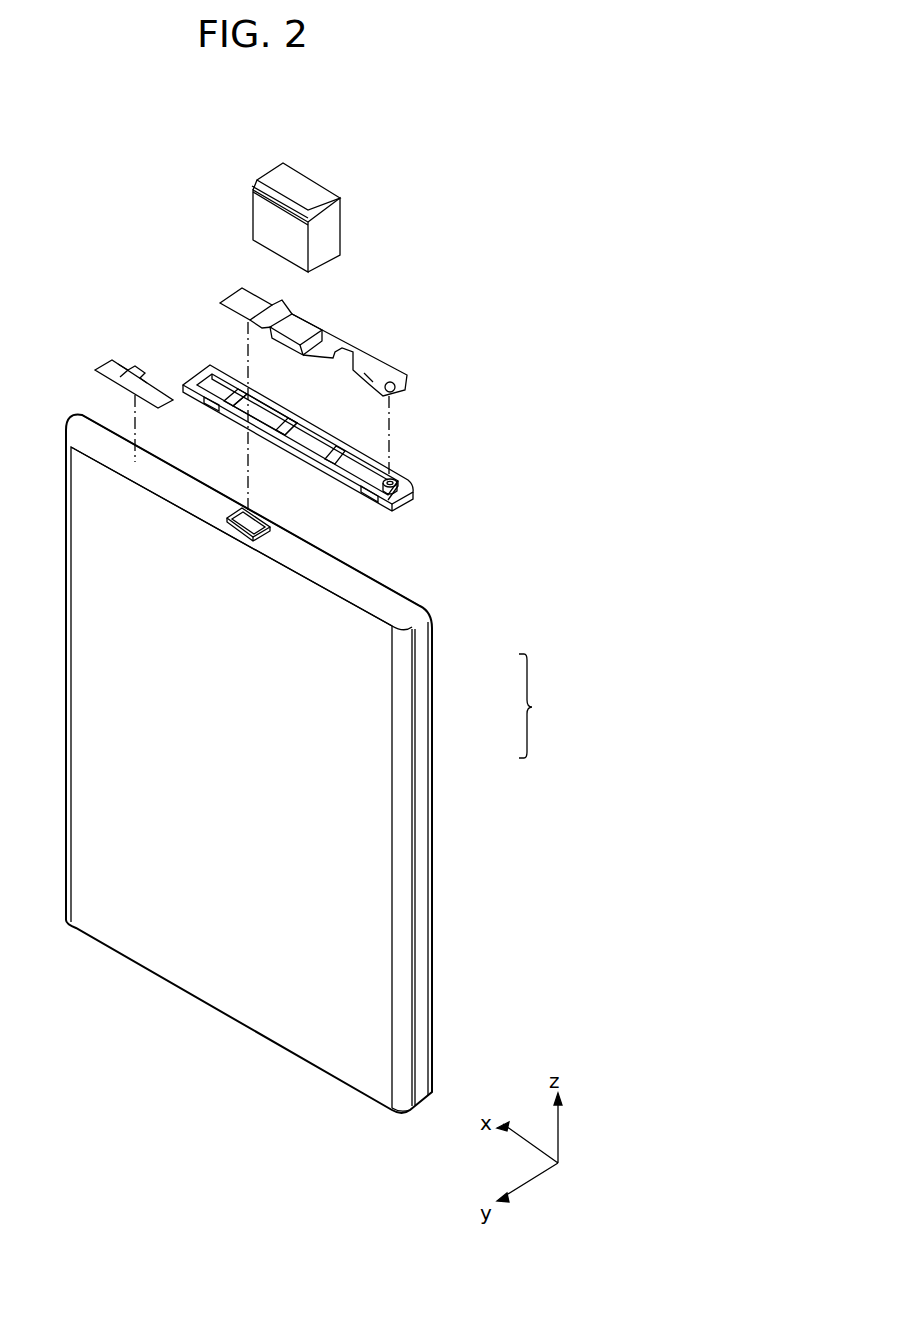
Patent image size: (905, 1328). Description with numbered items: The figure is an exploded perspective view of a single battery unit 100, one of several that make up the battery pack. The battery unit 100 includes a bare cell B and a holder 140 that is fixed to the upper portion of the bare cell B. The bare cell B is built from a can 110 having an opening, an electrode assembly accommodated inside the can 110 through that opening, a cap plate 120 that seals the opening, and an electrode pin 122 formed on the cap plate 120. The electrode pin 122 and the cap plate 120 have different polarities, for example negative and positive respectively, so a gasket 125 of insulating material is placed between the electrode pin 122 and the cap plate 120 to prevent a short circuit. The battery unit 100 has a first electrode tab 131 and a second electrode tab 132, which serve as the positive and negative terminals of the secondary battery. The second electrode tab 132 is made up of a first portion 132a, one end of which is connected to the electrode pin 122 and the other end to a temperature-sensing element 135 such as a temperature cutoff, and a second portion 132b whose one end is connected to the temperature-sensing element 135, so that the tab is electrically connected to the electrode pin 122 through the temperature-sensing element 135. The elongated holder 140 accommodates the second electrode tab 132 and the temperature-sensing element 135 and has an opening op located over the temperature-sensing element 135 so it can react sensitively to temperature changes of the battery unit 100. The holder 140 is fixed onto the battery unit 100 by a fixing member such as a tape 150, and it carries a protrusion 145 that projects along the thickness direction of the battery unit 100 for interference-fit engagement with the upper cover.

The battery unit 100 is at (501, 215).
The can 110 is at (420, 796).
The cap plate 120 is at (410, 612).
The bare cell B is at (534, 706).
The electrode pin 122 is at (243, 521).
The gasket 125 is at (258, 537).
The first electrode tab 131 is at (108, 364).
The second electrode tab 132 is at (339, 316).
The first portion 132a is at (257, 300).
The second portion 132b is at (357, 350).
The temperature-sensing element 135 is at (290, 335).
The holder 140 is at (337, 459).
The protrusion 145 is at (220, 413).
The opening op is at (297, 438).
The tape 150 is at (308, 183).